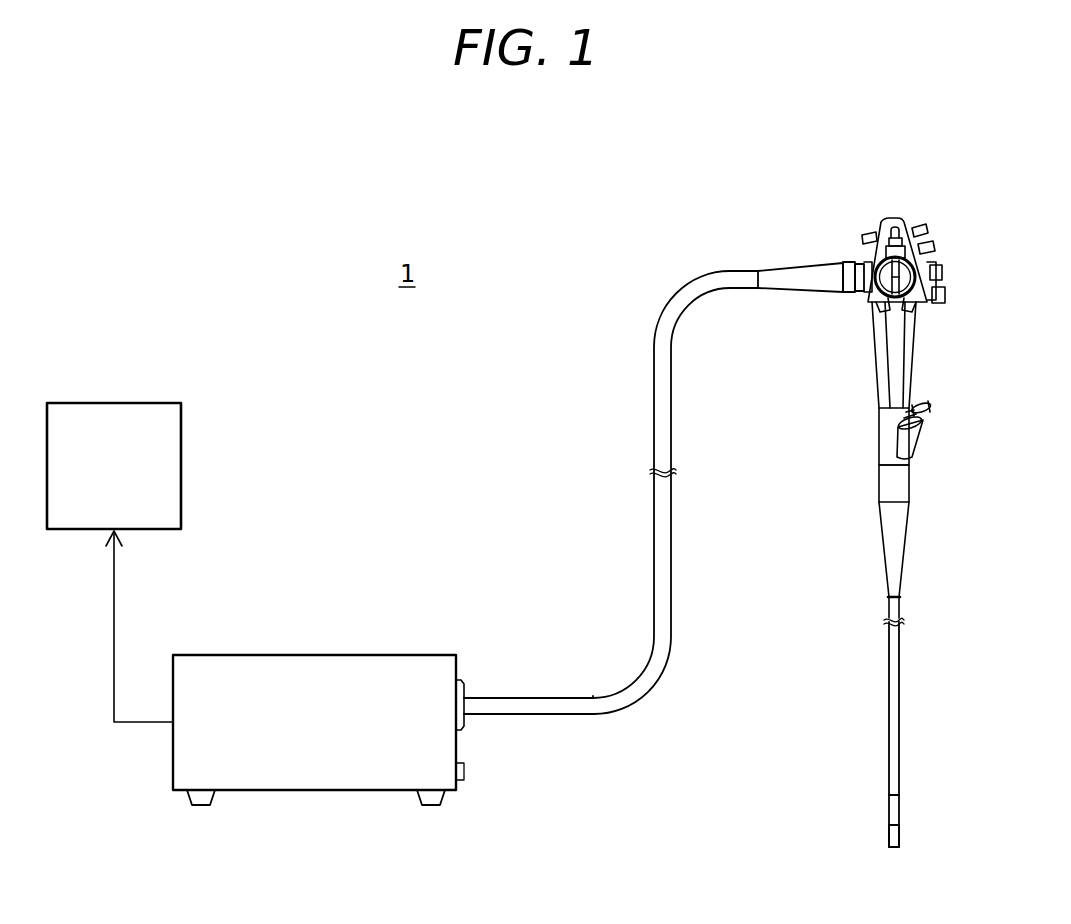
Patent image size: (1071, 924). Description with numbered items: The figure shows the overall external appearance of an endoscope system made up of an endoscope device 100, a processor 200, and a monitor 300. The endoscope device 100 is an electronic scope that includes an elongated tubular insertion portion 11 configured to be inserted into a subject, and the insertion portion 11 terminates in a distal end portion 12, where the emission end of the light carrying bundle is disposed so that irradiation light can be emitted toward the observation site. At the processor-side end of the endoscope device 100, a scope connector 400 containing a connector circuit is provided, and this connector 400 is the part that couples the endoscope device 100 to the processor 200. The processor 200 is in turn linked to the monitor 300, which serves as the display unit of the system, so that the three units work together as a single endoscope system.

The endoscope device 100 is at (667, 281).
The insertion portion 11 is at (897, 667).
The distal end portion 12 is at (890, 833).
The processor 200 is at (290, 651).
The monitor 300 is at (182, 462).
The scope connector 400 is at (464, 682).